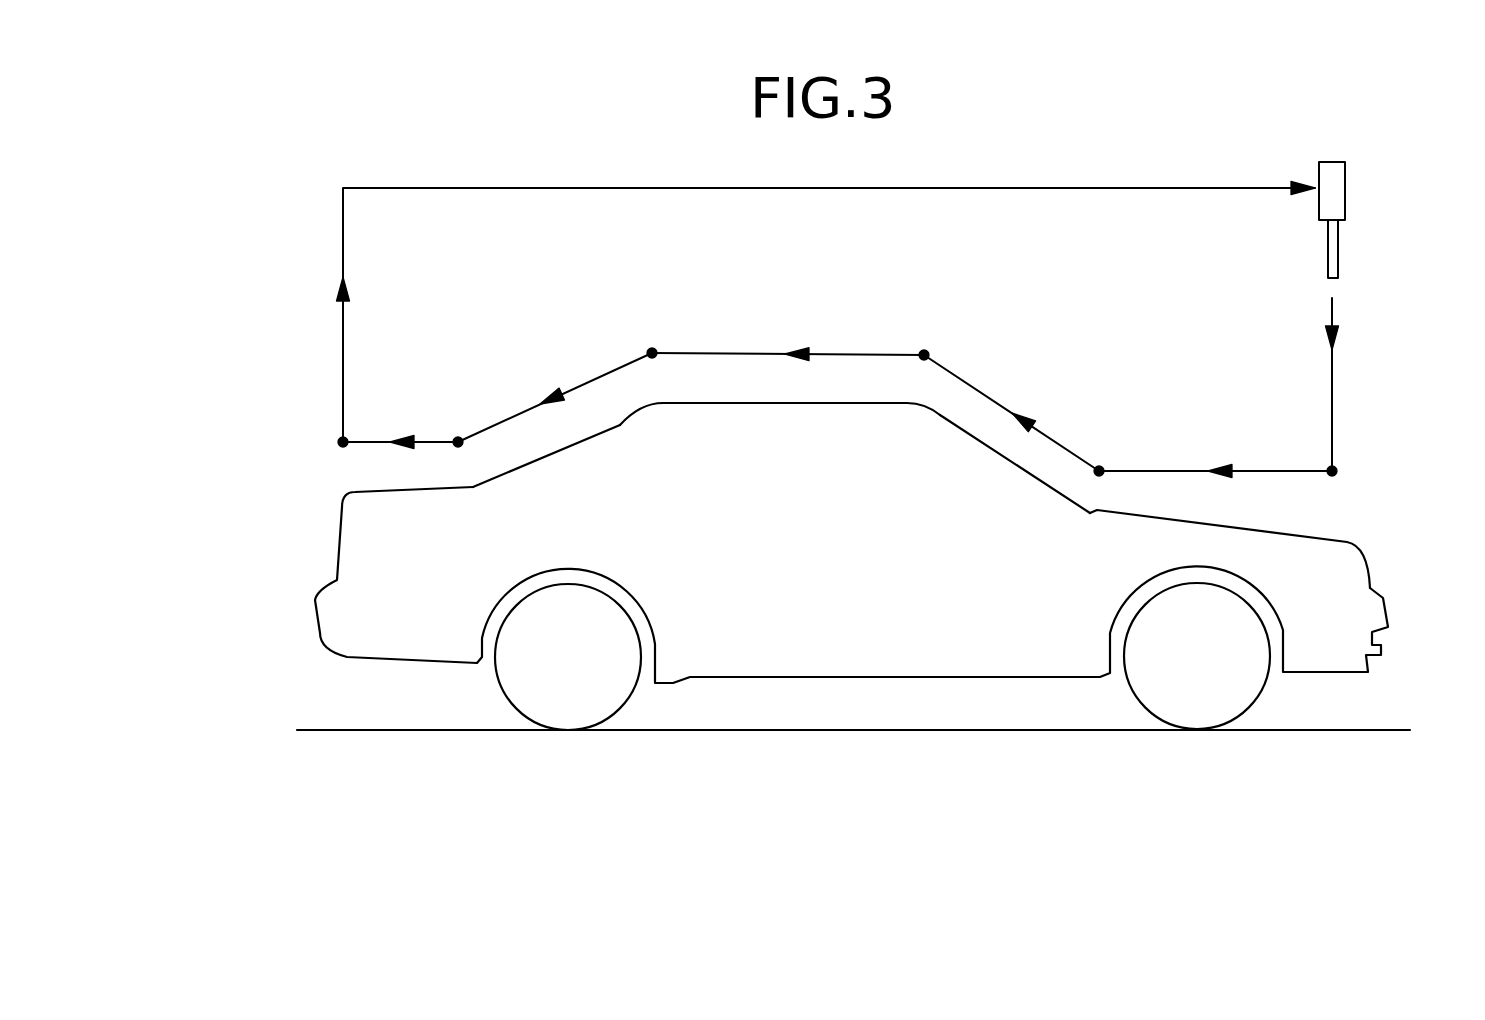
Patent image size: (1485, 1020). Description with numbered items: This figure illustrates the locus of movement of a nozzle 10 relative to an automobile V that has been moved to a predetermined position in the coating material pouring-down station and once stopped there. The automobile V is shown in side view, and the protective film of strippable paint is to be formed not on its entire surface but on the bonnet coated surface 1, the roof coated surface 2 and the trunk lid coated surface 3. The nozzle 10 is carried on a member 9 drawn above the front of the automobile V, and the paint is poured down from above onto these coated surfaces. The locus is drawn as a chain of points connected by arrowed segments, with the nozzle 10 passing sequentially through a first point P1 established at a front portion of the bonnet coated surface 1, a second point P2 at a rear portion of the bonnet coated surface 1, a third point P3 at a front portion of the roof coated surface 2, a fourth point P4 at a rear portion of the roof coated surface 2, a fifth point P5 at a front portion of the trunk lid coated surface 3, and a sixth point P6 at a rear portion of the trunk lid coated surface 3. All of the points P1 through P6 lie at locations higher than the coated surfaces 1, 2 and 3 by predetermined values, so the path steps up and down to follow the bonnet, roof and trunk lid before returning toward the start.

The automobile V is at (328, 546).
The bonnet coated surface 1 is at (1233, 520).
The roof coated surface 2 is at (767, 403).
The trunk lid coated surface 3 is at (383, 489).
The paint gun / coating applicator 9 is at (1332, 193).
The nozzle 10 is at (1333, 248).
The first point P1 is at (1332, 468).
The second point P2 is at (1100, 470).
The third point P3 is at (926, 354).
The fourth point P4 is at (653, 351).
The fifth point P5 is at (458, 440).
The sixth point P6 is at (340, 441).